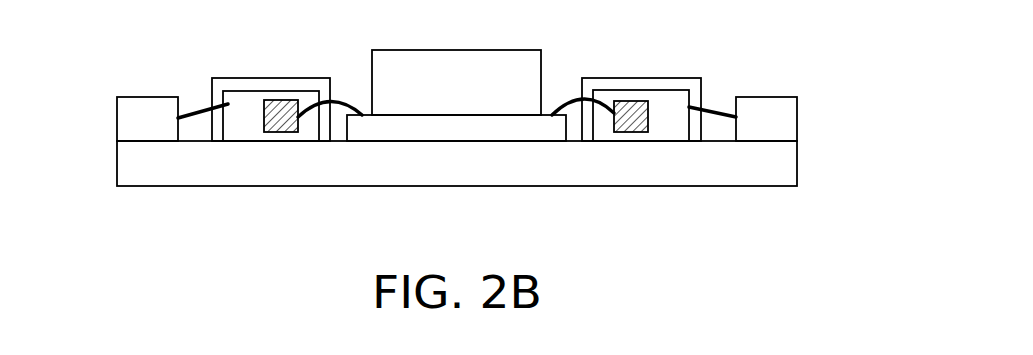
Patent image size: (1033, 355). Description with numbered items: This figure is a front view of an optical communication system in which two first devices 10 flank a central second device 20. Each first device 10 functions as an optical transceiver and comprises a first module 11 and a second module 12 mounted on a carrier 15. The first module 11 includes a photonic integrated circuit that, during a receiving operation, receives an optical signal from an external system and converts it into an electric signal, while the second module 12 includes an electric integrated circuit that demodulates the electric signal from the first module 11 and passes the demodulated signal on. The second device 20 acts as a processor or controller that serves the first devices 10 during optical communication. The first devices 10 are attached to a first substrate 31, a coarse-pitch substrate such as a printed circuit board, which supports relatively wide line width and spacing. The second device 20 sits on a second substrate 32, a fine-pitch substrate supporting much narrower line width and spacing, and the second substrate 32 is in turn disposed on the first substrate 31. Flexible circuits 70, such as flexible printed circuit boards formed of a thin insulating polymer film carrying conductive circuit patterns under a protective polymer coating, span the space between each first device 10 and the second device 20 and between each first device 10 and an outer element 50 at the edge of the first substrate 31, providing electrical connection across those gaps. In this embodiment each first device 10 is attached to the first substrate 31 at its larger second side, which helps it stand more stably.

The first device 10 is at (190, 66).
The first module 11 is at (680, 98).
The second module 12 is at (630, 132).
The carrier 15 is at (642, 85).
The second device 20 is at (470, 99).
The first substrate 31 is at (128, 162).
The second substrate 32 is at (456, 127).
The electrode pad 50 is at (128, 117).
The flexible circuit 70 is at (335, 100).